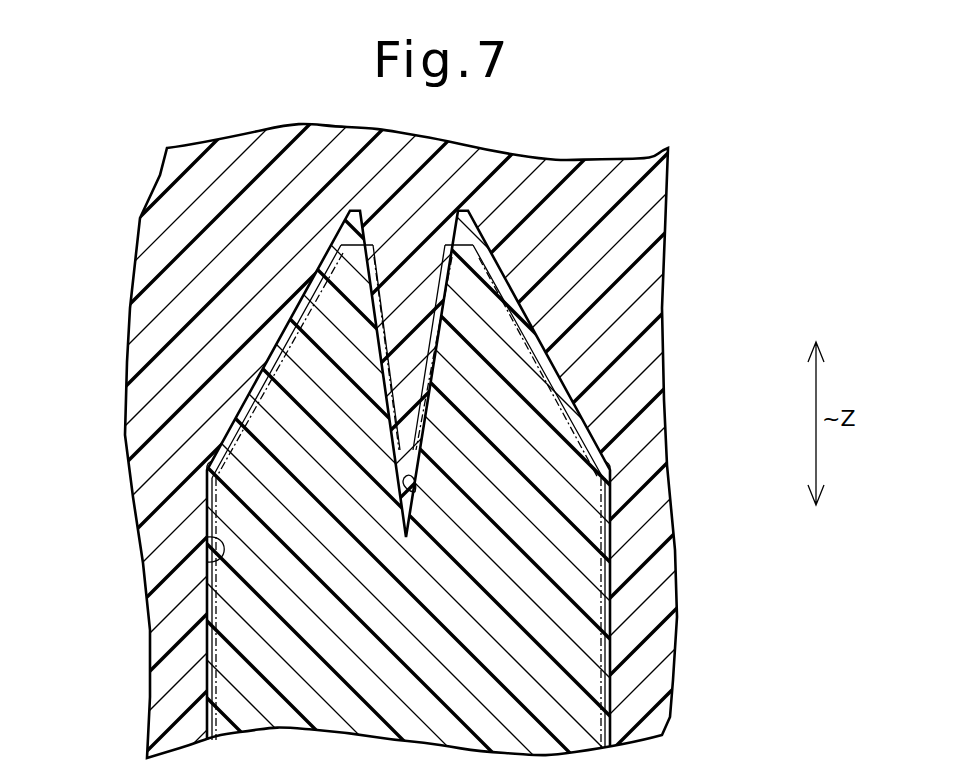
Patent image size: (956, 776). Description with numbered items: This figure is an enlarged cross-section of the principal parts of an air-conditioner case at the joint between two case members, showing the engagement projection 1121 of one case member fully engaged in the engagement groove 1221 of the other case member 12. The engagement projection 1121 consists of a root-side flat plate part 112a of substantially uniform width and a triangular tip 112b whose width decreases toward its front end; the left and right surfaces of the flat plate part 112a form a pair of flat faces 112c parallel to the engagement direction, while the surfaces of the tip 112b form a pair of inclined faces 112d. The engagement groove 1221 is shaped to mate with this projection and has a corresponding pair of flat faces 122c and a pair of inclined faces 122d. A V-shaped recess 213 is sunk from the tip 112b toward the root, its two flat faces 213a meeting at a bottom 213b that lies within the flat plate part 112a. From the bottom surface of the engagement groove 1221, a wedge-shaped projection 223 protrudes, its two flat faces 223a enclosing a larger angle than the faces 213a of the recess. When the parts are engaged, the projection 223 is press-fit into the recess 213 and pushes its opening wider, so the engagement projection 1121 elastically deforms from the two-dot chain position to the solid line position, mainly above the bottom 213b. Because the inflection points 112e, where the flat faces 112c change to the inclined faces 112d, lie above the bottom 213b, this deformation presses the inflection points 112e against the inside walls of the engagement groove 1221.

The case member 12 is at (210, 203).
The engagement projection 1121 is at (263, 690).
The flat plate part 112a is at (267, 590).
The tip 112b is at (325, 333).
The flat faces 112c is at (213, 657).
The inclined faces 112d is at (320, 313).
The inflection points 112e is at (207, 494).
The flat faces 122c is at (208, 628).
The inclined faces 122d is at (320, 257).
The projection 223 is at (282, 355).
The flat faces 223a is at (412, 370).
The recess 213 is at (415, 492).
The flat faces 213a is at (246, 407).
The bottom 213b is at (430, 552).
The engagement groove 1221 is at (207, 537).